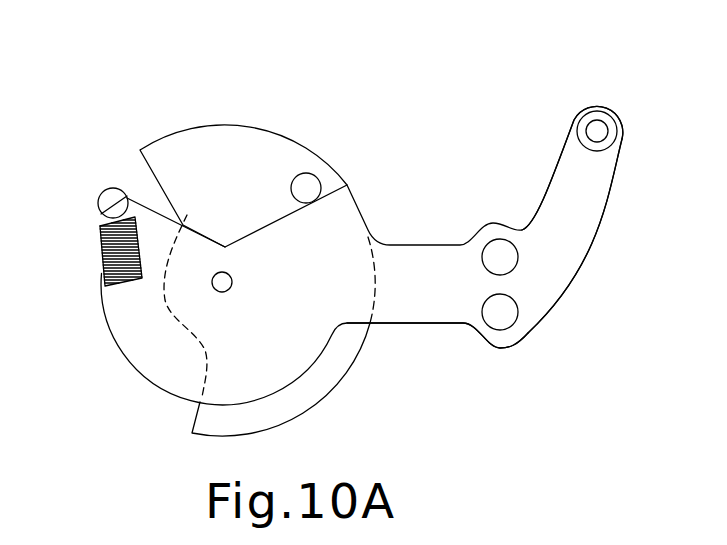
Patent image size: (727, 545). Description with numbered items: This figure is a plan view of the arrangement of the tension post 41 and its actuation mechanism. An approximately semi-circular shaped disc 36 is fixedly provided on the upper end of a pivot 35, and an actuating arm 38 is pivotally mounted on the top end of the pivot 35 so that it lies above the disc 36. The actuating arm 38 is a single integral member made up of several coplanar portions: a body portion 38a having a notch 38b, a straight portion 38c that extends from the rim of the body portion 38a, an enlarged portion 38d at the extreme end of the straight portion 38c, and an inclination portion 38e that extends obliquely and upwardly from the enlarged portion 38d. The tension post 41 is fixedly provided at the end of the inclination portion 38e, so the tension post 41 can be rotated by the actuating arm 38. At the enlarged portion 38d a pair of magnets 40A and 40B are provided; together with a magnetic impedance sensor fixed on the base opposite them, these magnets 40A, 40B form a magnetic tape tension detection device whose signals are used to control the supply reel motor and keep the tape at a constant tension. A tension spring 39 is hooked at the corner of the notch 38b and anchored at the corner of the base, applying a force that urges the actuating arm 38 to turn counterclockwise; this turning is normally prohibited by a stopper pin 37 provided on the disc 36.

The pivot 35 is at (216, 286).
The disc 36 is at (228, 170).
The stopper pin 37 is at (306, 190).
The actuating arm 38 is at (427, 293).
The body portion 38a is at (293, 343).
The notch 38b is at (137, 200).
The straight portion 38c is at (441, 306).
The enlarged portion 38d is at (543, 288).
The inclination portion 38e is at (583, 215).
The tension spring 39 is at (100, 290).
The magnet 40A is at (500, 250).
The magnet 40B is at (506, 316).
The tension post 41 is at (600, 138).